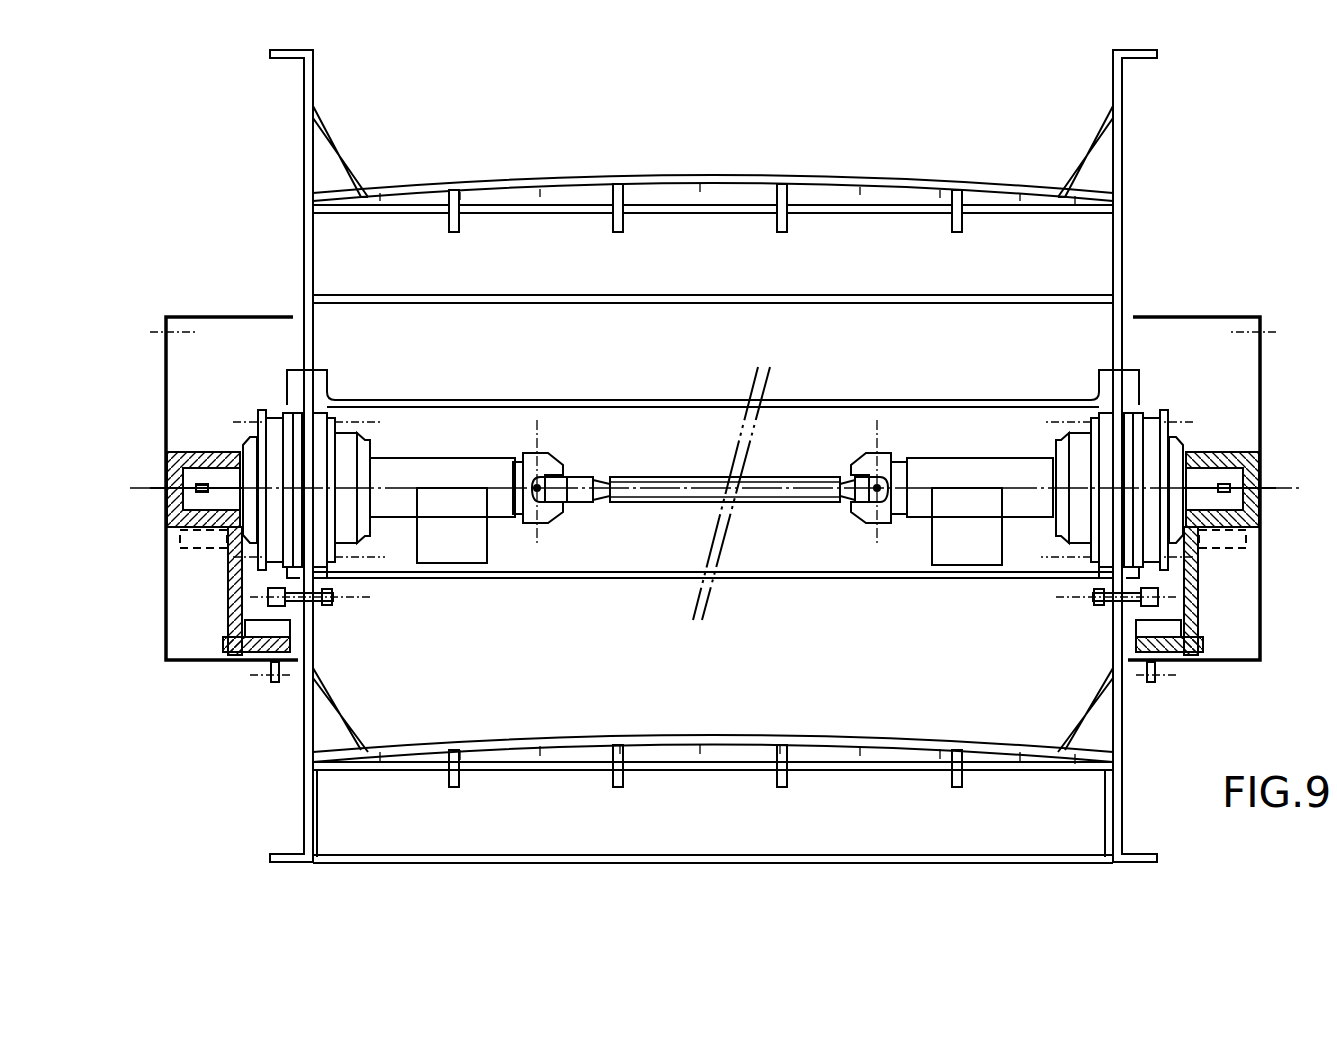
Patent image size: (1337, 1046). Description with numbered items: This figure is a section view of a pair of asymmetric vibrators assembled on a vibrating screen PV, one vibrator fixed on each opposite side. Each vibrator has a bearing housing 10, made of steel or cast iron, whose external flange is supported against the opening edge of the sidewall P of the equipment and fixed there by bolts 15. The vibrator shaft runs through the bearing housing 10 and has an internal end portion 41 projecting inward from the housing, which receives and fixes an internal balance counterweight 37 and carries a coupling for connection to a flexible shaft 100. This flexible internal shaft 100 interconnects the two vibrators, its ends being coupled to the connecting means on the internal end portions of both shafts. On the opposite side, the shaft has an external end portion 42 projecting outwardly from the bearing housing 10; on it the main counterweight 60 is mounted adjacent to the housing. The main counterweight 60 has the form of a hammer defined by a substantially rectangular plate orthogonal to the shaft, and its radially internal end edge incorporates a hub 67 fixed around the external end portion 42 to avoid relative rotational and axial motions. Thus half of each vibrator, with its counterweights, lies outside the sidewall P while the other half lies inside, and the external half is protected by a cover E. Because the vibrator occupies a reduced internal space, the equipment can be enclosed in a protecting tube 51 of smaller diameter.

The bearing housing 10 is at (292, 390).
The bolts 15 is at (333, 607).
The internal balance counterweight 37 is at (460, 540).
The internal end portion 41 is at (493, 468).
The external end portion 42 is at (218, 483).
The protecting tube 51 is at (655, 396).
The main counterweight 60 is at (228, 572).
The hub 67 is at (189, 450).
The flexible shaft 100 is at (643, 494).
The sidewall P is at (301, 298).
The vibrating screen PV is at (418, 758).
The cover E is at (194, 670).